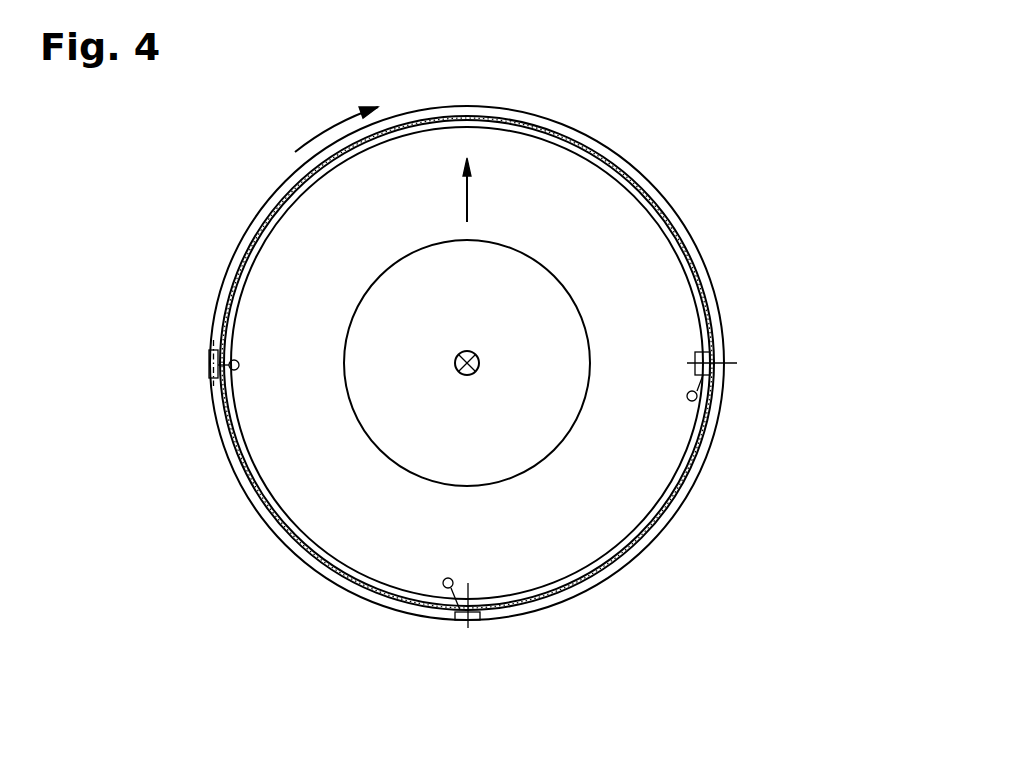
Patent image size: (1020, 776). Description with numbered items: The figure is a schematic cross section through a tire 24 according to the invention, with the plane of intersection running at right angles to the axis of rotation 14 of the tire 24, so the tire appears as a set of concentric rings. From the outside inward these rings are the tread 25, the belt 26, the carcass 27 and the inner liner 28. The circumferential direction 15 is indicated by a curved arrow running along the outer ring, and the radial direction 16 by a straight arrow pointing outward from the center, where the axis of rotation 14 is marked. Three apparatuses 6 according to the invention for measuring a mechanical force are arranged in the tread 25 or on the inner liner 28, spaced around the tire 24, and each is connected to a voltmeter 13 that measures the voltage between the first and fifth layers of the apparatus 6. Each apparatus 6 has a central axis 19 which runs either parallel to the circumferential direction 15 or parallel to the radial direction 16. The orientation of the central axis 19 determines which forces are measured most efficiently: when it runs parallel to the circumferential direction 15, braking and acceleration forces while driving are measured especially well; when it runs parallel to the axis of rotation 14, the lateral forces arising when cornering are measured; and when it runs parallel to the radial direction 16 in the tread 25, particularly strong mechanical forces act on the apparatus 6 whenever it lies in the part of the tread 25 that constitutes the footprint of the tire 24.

The apparatus for measuring a mechanical force 6 is at (208, 356).
The means of measuring the voltage; voltmeter 13 is at (240, 365).
The axis of rotation 14 is at (480, 365).
The circumferential direction 15 is at (333, 126).
The radial direction 16 is at (470, 197).
The central axis of the apparatus 19 is at (210, 386).
The tire 24 is at (466, 363).
The tread 25 is at (620, 162).
The belt 26 is at (660, 202).
The carcass 27 is at (680, 237).
The inner liner 28 is at (695, 280).